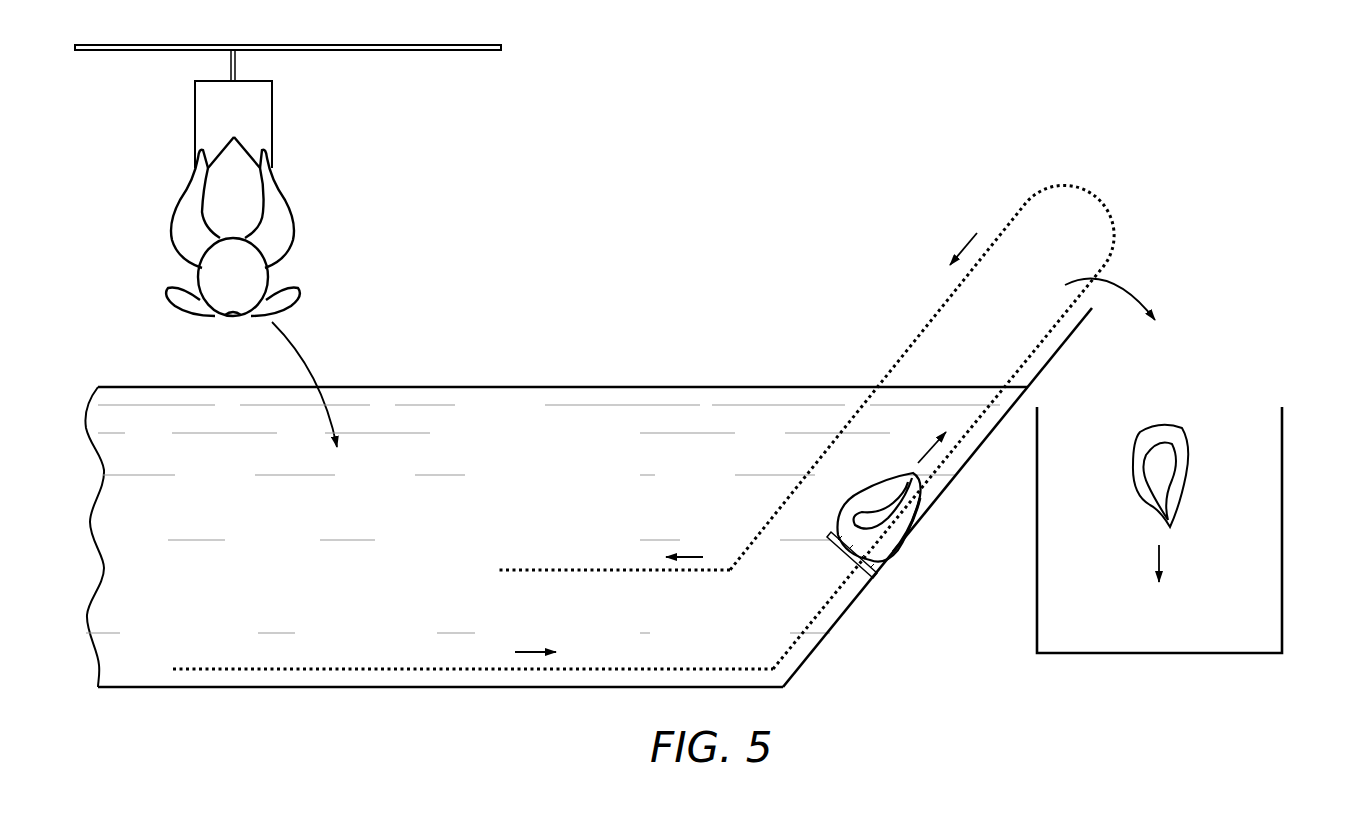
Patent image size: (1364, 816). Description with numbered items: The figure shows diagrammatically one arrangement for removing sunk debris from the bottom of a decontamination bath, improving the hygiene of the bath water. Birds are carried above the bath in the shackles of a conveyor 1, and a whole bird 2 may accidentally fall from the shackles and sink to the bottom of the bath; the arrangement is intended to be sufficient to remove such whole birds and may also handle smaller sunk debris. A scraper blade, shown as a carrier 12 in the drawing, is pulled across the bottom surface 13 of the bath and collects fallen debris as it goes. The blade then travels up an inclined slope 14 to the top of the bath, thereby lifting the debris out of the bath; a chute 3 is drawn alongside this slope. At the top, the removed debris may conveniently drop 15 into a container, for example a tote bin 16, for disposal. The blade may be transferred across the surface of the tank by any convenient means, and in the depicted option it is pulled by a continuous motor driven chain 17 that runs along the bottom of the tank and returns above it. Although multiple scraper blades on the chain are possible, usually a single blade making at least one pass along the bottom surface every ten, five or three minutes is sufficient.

The conveyor 1 is at (418, 52).
The whole bird 2 is at (293, 212).
The chute 3 is at (1084, 318).
The carrier 12 is at (873, 578).
The bottom surface 13 is at (418, 688).
The inclined slope 14 is at (968, 460).
The drop 15 is at (1128, 276).
The tote bin 16 is at (1282, 422).
The continuous motor driven chain 17 is at (735, 572).